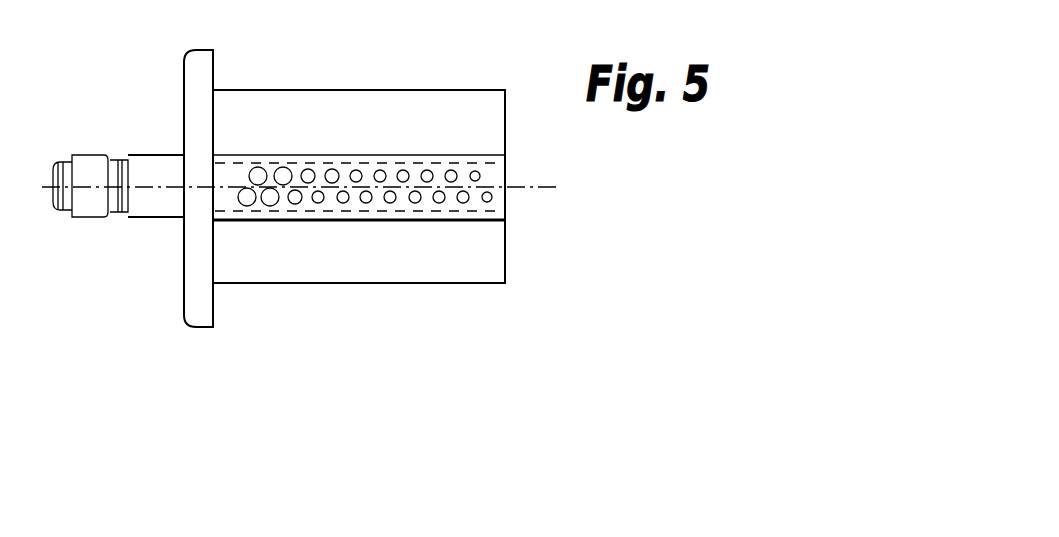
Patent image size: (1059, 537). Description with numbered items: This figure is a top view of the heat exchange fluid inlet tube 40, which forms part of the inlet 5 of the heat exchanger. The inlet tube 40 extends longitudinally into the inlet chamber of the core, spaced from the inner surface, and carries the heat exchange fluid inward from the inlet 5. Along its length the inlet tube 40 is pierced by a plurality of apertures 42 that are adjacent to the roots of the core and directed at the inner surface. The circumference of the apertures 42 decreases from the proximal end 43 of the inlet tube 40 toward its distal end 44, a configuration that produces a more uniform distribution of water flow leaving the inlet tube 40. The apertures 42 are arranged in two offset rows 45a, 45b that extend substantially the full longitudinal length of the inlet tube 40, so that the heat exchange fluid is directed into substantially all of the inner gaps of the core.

The inlet 5 is at (91, 153).
The heat exchange fluid inlet tube 40 is at (228, 223).
The apertures 42 is at (269, 164).
The proximal end 43 is at (234, 152).
The distal end 44 is at (456, 153).
The first offset row of apertures 45a is at (496, 174).
The second offset row of apertures 45b is at (509, 246).